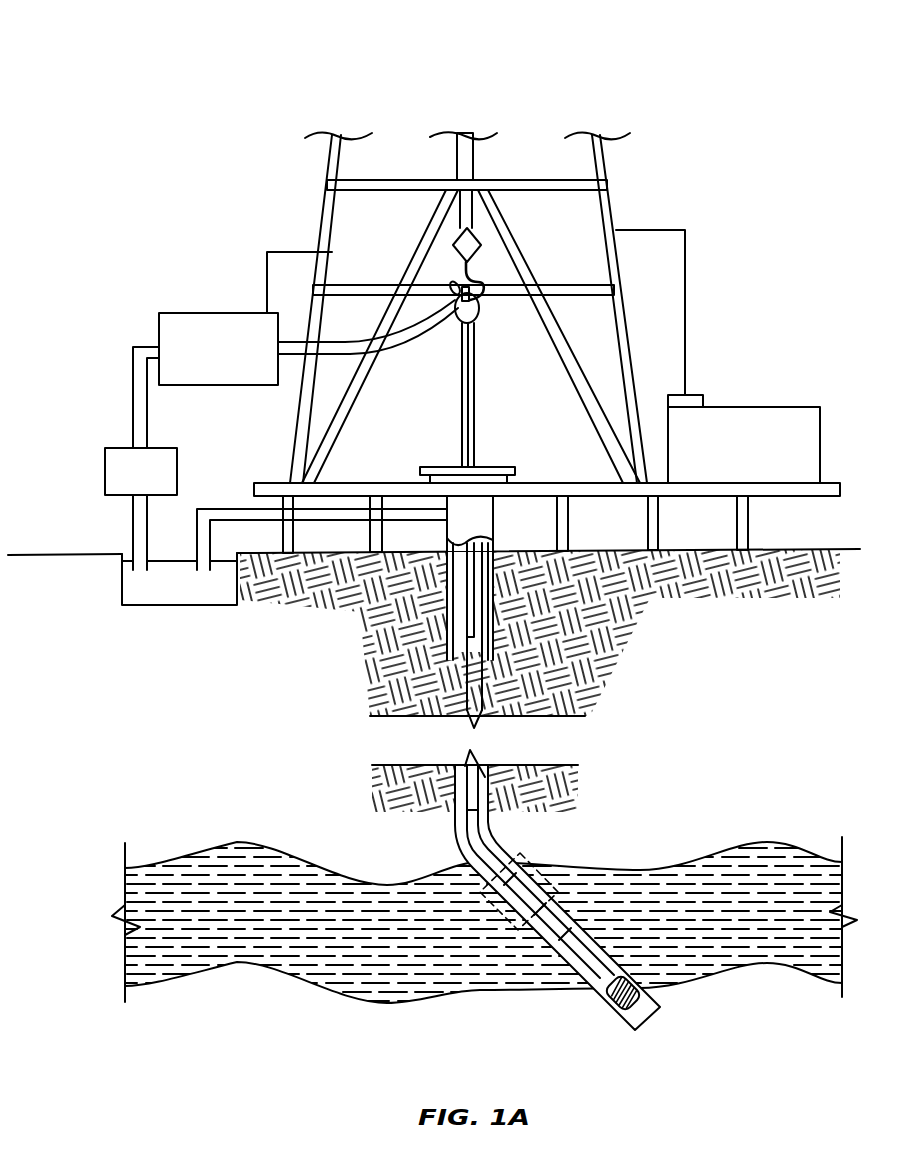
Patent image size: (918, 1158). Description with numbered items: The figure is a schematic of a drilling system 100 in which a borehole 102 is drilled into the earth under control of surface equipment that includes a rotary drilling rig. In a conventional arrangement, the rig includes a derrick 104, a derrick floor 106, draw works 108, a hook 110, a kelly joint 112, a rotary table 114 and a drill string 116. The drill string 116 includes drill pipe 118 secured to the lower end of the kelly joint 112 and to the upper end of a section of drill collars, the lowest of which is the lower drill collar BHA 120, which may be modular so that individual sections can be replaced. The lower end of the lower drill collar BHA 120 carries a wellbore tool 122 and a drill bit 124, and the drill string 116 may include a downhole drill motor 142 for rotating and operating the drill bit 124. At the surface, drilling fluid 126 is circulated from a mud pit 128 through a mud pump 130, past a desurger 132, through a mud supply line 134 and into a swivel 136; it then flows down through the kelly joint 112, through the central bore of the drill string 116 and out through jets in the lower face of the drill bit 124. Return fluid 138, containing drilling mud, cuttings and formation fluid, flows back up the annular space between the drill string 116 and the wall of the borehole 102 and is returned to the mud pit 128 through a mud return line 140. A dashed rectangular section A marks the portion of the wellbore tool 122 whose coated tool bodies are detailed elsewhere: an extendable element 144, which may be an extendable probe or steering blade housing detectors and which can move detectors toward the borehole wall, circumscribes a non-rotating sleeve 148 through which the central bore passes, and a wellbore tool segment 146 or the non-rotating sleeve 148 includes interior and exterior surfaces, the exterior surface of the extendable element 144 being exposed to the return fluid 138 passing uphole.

The drilling system 100 is at (146, 90).
The borehole 102 is at (408, 685).
The derrick 104 is at (616, 215).
The derrick floor 106 is at (272, 483).
The draw works 108 is at (478, 153).
The hook 110 is at (484, 280).
The kelly joint 112 is at (477, 425).
The rotary table 114 is at (503, 468).
The drill string 116 is at (488, 694).
The drill pipe 118 is at (492, 668).
The lower drill collar BHA 120 is at (600, 926).
The wellbore tool 122 is at (488, 905).
The drill bit 124 is at (608, 1003).
The drilling fluid 126 is at (145, 605).
The mud pit 128 is at (185, 600).
The mud pump 130 is at (118, 448).
The desurger 132 is at (195, 313).
The mud supply line 134 is at (405, 337).
The swivel 136 is at (480, 312).
The return fluid 138 is at (458, 843).
The mud return line 140 is at (420, 510).
The downhole drill motor 142 is at (597, 965).
The extendable element 144 is at (513, 863).
The wellbore tool segment 146 is at (528, 918).
The non-rotating sleeve 148 is at (486, 878).
The dashed rectangular section A is at (522, 850).